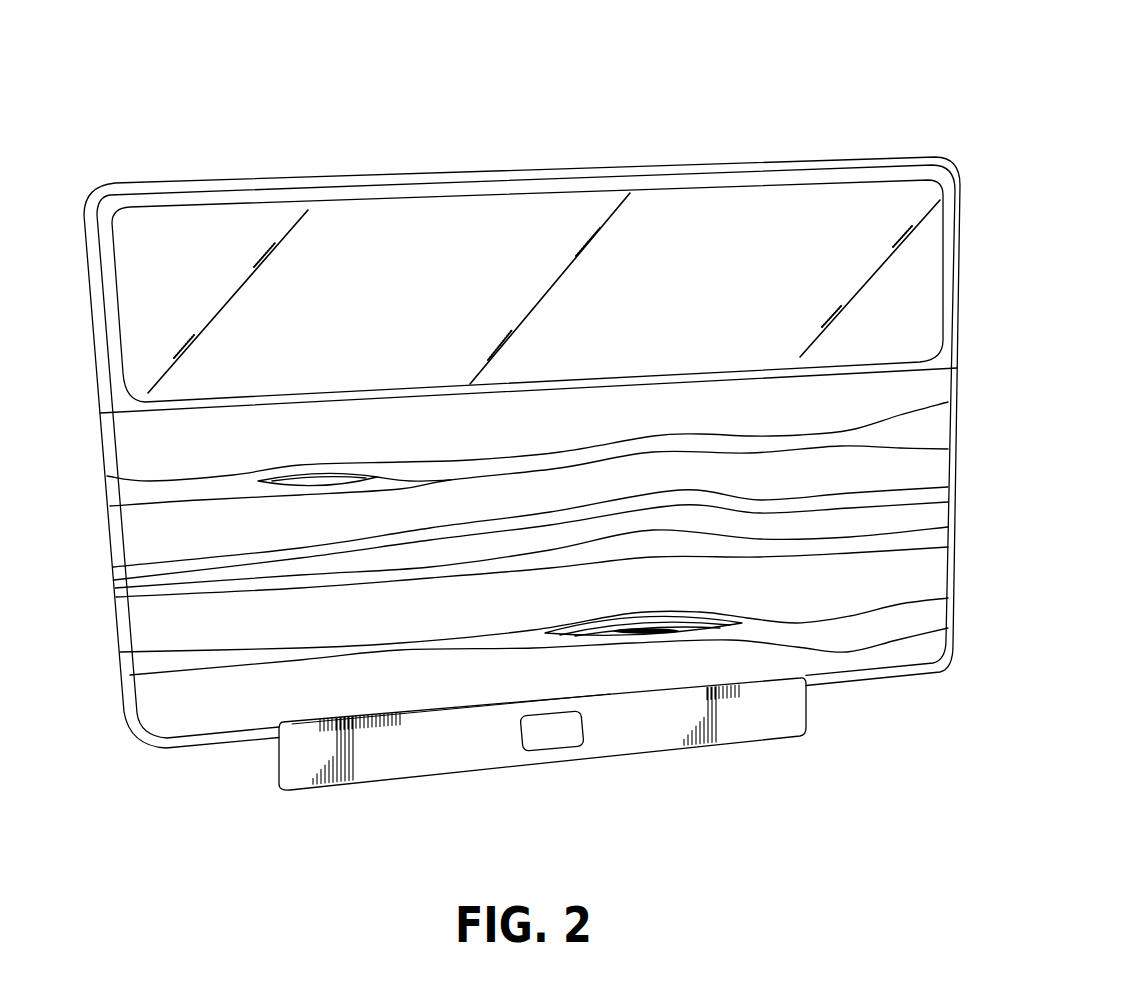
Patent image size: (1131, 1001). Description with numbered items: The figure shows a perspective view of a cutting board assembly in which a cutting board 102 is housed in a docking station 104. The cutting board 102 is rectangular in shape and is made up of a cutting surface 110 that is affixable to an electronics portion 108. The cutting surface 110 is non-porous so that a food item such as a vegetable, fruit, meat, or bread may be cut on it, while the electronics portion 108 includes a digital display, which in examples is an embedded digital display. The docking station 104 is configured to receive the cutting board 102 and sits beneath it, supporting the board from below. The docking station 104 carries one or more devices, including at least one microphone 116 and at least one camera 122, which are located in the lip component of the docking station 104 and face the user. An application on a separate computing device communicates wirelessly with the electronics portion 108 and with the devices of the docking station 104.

The cutting board 102 is at (830, 122).
The docking station 104 is at (555, 772).
The electronics portion 108 is at (927, 280).
The cutting surface 110 is at (955, 450).
The microphone 116 is at (577, 789).
The camera 122 is at (528, 738).